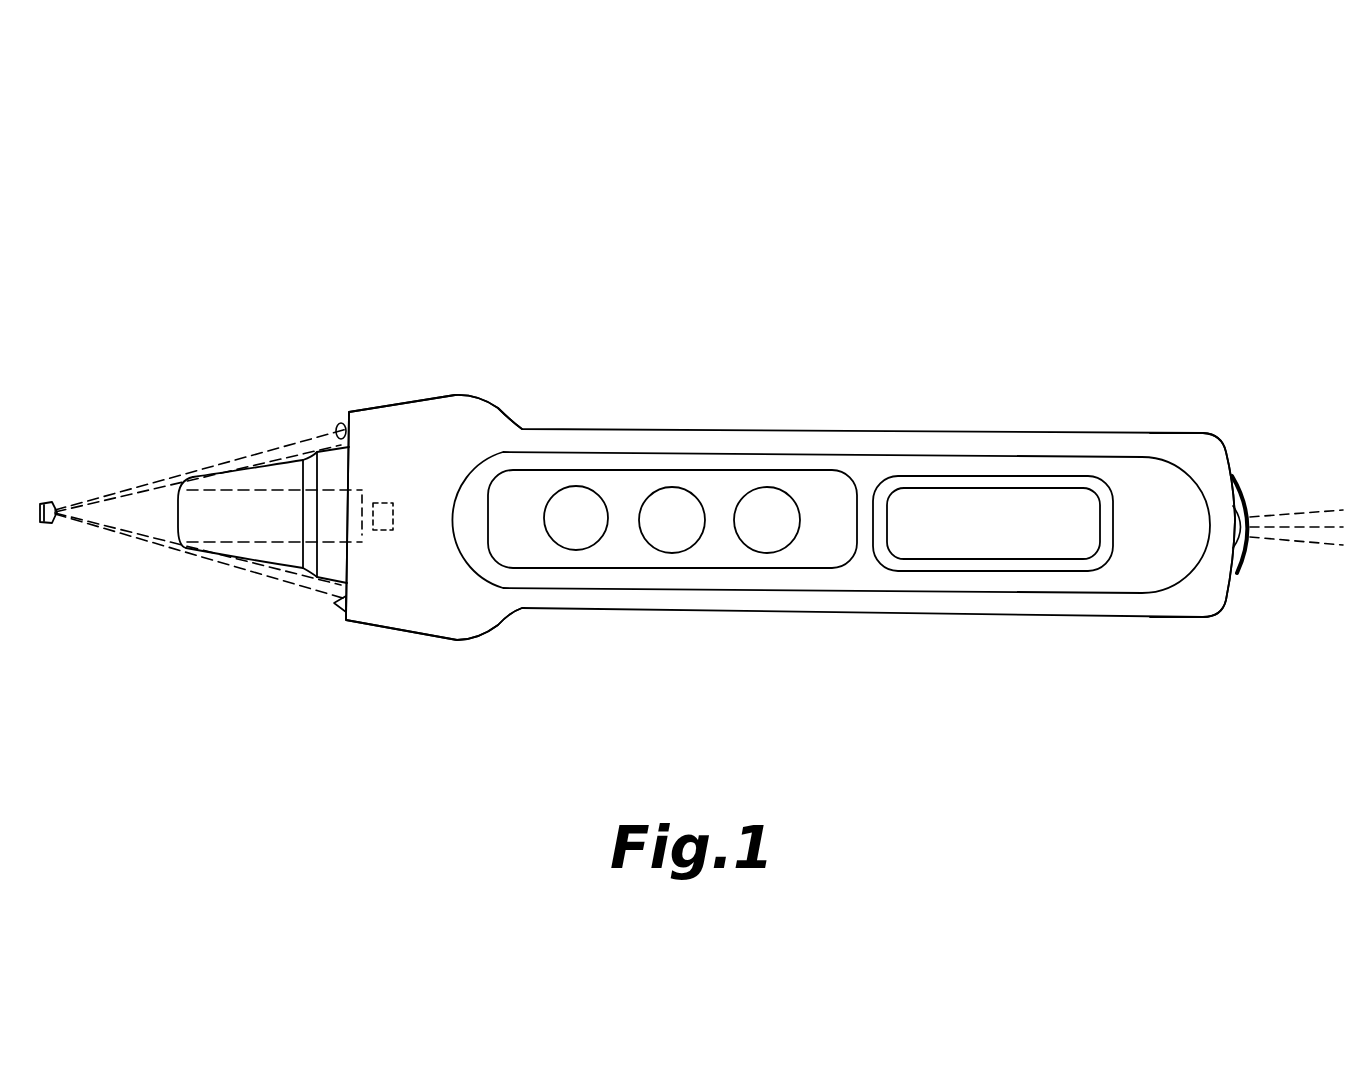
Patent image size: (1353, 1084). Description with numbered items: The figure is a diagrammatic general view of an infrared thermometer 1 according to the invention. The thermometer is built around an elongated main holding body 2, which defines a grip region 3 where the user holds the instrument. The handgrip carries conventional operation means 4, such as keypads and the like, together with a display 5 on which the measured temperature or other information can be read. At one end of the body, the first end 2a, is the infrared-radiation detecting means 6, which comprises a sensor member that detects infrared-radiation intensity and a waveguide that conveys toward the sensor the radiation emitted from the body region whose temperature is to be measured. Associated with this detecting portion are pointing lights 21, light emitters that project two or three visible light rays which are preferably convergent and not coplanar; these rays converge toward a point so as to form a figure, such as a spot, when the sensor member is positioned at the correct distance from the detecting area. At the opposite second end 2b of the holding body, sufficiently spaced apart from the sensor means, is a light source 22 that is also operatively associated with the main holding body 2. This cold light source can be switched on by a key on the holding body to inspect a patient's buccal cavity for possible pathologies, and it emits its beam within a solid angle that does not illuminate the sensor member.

The infrared thermometer 1 is at (681, 342).
The main holding body 2 is at (1023, 425).
The first end 2a is at (473, 397).
The second end 2b is at (1198, 433).
The grip region 3 is at (863, 472).
The operation means 4 is at (620, 430).
The display 5 is at (1090, 480).
The infrared-radiation detecting means 6 is at (369, 478).
The pointing lights 21 is at (335, 426).
The light source 22 is at (1248, 537).